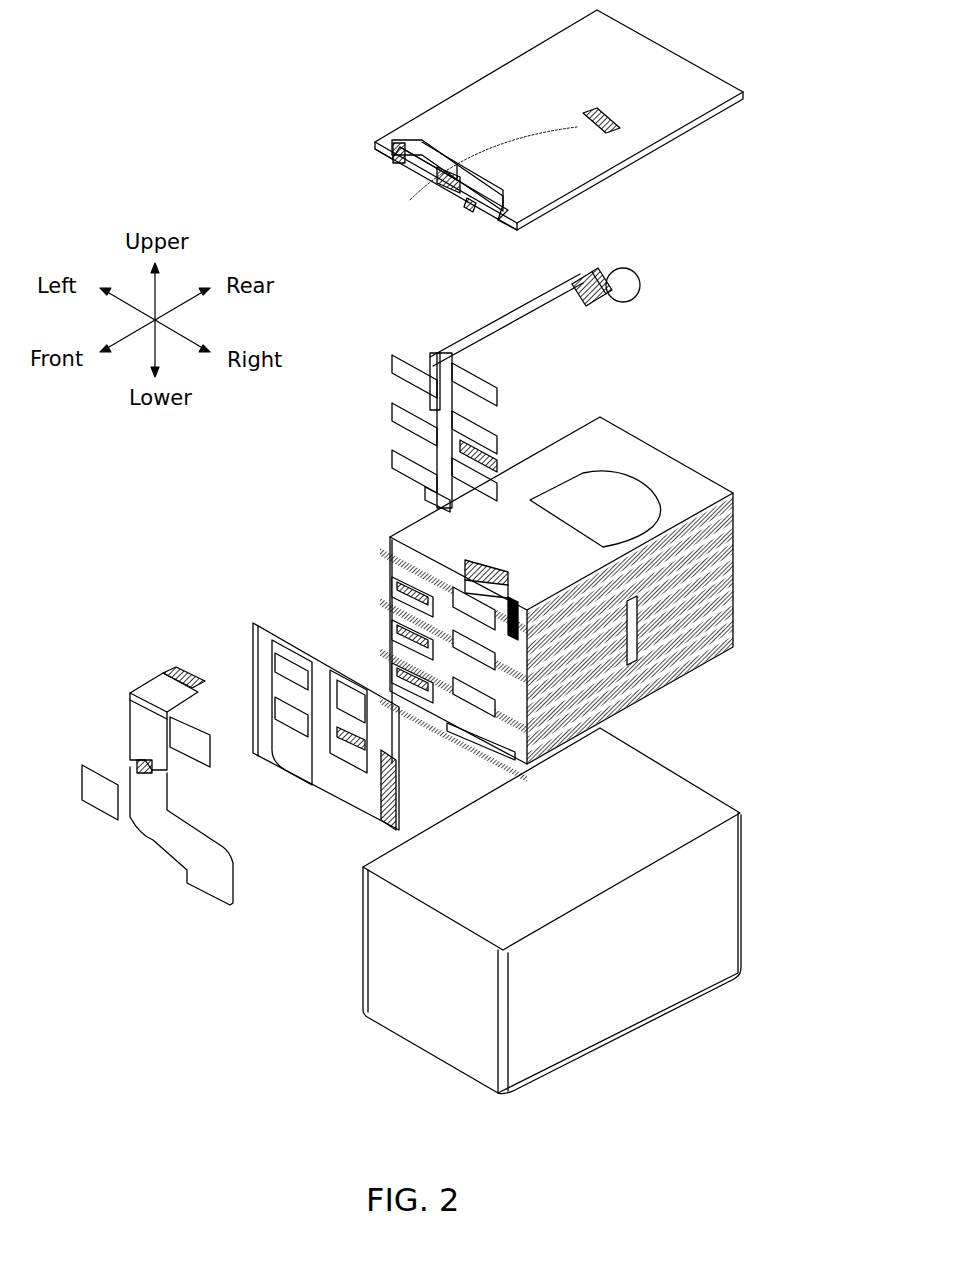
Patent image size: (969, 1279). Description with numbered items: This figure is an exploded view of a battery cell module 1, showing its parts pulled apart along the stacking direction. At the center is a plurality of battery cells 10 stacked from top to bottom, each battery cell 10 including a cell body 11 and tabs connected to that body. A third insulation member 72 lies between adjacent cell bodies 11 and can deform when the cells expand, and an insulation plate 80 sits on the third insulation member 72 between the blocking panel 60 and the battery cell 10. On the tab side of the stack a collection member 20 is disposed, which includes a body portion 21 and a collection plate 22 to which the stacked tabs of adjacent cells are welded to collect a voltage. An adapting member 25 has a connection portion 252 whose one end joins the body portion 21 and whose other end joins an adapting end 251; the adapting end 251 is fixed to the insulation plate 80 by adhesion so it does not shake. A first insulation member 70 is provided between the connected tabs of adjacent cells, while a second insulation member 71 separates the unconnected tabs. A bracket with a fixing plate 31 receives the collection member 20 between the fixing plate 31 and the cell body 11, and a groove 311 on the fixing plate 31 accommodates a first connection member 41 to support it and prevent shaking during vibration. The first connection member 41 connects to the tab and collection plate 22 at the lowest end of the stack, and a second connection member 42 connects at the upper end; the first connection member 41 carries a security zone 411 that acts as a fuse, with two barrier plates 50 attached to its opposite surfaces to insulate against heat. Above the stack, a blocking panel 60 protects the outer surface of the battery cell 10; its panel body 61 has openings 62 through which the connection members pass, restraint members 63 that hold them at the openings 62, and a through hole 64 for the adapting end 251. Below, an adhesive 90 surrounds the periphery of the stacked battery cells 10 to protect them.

The battery cell module 1 is at (286, 61).
The battery cell 10 is at (544, 598).
The cell body 11 is at (593, 512).
The collection member 20 is at (387, 432).
The body portion 21 is at (393, 408).
The collection plate 22 is at (393, 366).
The adapting member 25 is at (593, 303).
The adapting end 251 is at (625, 268).
The connection portion 252 is at (580, 292).
The fixing plate 31 is at (324, 736).
The groove 311 is at (290, 747).
The first connection member 41 is at (123, 786).
The security zone 411 is at (135, 762).
The second connection member 42 is at (462, 562).
The barrier plate 50 is at (187, 735).
The blocking panel 60 is at (535, 147).
The panel body 61 is at (507, 220).
The opening 62 is at (443, 224).
The restraint member 63 is at (395, 162).
The through hole 64 is at (437, 180).
The first insulation member 70 is at (385, 600).
The second insulation member 71 is at (388, 630).
The third insulation member 72 is at (700, 490).
The insulation plate 80 is at (623, 480).
The adhesive 90 is at (733, 878).